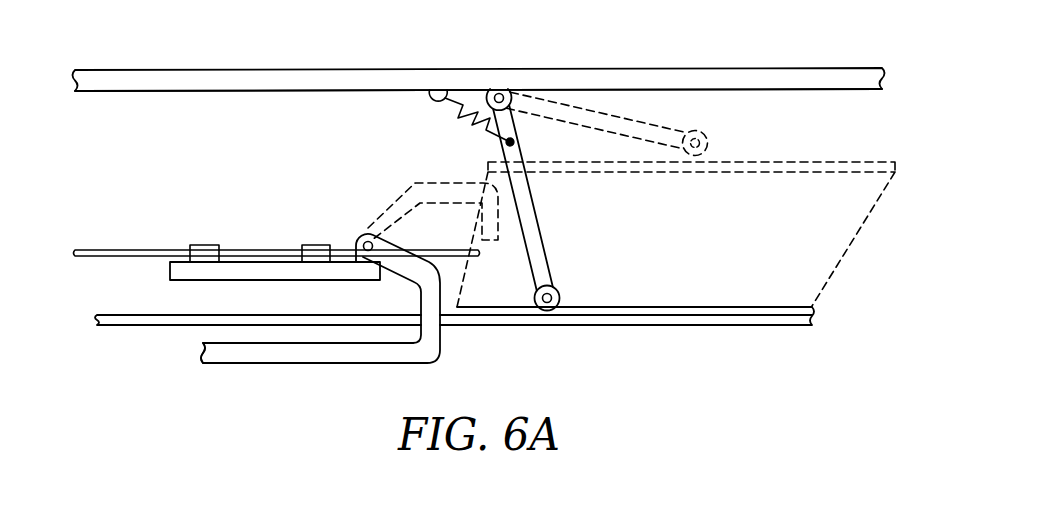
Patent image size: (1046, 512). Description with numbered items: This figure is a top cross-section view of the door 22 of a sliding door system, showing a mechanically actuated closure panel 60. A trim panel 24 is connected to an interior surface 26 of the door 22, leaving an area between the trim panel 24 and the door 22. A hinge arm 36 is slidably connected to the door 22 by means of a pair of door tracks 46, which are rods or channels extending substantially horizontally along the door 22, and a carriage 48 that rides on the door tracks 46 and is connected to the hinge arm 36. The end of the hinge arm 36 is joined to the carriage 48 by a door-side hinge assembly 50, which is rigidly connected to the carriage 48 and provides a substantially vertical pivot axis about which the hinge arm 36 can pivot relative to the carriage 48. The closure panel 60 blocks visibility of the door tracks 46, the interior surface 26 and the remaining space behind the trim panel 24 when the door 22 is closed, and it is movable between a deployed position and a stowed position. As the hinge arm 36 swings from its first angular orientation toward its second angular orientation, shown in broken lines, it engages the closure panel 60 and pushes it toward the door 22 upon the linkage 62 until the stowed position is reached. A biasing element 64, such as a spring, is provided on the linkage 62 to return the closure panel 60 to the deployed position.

The door 22 is at (133, 70).
The interior surface 26 is at (130, 92).
The trim panel 24 is at (745, 326).
The hinge arm 36 is at (395, 205).
The door tracks 46 is at (93, 248).
The carriage 48 is at (178, 281).
The door-side hinge assembly 50 is at (358, 240).
The closure panel 60 is at (829, 160).
The linkage 62 is at (668, 128).
The biasing element 64 is at (456, 114).